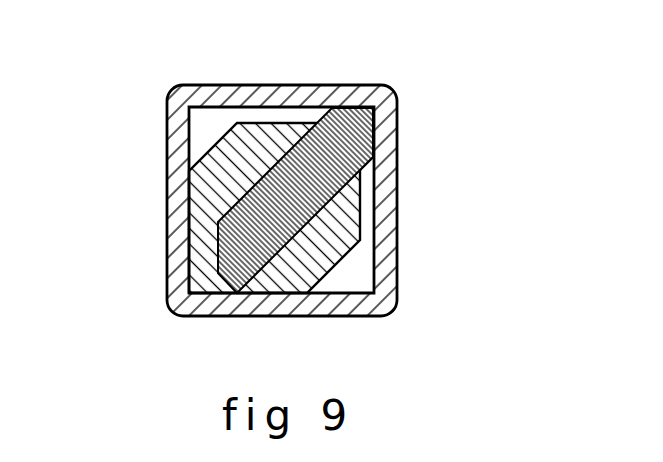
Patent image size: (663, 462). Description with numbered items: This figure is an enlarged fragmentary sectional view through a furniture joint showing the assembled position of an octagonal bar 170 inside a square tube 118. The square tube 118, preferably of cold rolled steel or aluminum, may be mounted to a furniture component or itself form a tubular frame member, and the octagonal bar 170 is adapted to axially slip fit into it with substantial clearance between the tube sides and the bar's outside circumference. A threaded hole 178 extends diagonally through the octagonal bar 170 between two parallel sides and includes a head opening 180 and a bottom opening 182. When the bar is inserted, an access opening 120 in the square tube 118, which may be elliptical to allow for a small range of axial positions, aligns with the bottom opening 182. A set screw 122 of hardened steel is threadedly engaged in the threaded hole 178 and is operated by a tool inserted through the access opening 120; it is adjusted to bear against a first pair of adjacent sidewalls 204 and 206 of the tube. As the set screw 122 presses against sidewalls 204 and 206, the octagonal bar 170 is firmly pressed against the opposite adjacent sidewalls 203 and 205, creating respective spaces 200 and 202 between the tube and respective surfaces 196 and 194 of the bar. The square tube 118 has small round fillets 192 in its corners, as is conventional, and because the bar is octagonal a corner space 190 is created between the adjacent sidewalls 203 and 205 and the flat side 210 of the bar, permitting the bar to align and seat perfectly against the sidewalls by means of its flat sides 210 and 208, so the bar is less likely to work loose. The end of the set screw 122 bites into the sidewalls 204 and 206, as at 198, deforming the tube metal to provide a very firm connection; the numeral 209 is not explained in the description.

The square tube 118 is at (166, 96).
The access opening 120 is at (189, 257).
The set screw 122 is at (365, 168).
The octagonal bar 170 is at (265, 118).
The threaded hole 178 is at (252, 270).
The head opening 180 is at (352, 135).
The bottom opening 182 is at (212, 228).
The corner space 190 is at (188, 314).
The round fillets 192 is at (203, 292).
The surface of bar 194 is at (358, 229).
The surface of bar 196 is at (290, 122).
The bite location 198 is at (313, 130).
The space 200 is at (247, 114).
The space 202 is at (368, 198).
The sidewall 203 is at (173, 223).
The sidewall 204 is at (217, 84).
The sidewall 205 is at (262, 316).
The sidewall 206 is at (385, 143).
The flat side of bar 208 is at (282, 316).
The lower corner 209 is at (202, 300).
The flat side of bar 210 is at (178, 172).